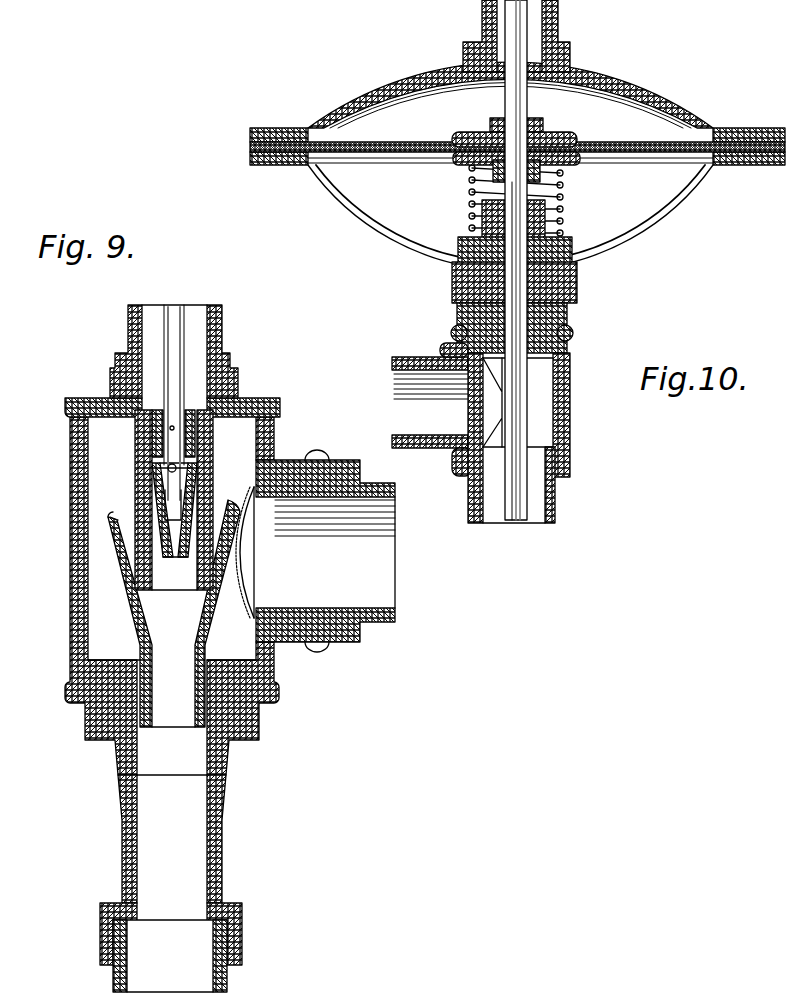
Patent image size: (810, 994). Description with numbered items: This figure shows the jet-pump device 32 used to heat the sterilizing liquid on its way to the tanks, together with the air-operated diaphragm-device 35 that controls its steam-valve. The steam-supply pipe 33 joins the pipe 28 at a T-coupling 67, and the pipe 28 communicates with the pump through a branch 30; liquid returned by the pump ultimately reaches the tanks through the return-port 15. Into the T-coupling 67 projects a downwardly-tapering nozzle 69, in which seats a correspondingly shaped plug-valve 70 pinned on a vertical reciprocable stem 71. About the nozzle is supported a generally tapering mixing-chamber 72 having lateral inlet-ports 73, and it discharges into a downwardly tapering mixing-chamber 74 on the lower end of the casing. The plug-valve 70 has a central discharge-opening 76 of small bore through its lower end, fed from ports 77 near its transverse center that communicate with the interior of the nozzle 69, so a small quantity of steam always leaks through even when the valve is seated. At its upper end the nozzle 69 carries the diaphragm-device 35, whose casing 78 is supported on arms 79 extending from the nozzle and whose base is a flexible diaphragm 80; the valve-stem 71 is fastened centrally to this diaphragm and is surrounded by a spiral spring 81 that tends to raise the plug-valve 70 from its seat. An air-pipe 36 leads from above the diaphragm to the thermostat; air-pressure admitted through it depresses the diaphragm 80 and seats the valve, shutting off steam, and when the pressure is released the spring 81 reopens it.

In FIG. 9, the return-port 15 is at (143, 840).
In FIG. 9, the pipe 28 is at (228, 977).
In FIG. 9, the branch 30 is at (384, 585).
In FIG. 9, the jet-pump device 32 is at (285, 360).
In FIG. 10, the steam-supply pipe 33 is at (412, 357).
In FIG. 10, the diaphragm-device 35 is at (604, 78).
In FIG. 10, the air-pipe 36 is at (495, 22).
In FIG. 9, the T-coupling 67 is at (72, 640).
In FIG. 9, the nozzle 69 is at (222, 338).
In FIG. 10, the nozzle 69 is at (556, 505).
In FIG. 9, the plug-valve 70 is at (195, 417).
In FIG. 9, the valve-stem 71 is at (175, 324).
In FIG. 10, the valve-stem 71 is at (568, 320).
In FIG. 9, the mixing-chamber 72 is at (130, 603).
In FIG. 9, the lateral inlet-ports 73 is at (230, 512).
In FIG. 9, the downwardly tapering mixing-chamber 74 is at (207, 727).
In FIG. 9, the central discharge-opening 76 is at (165, 520).
In FIG. 9, the ports 77 is at (168, 468).
In FIG. 10, the casing 78 is at (362, 106).
In FIG. 10, the arms 79 is at (742, 172).
In FIG. 10, the flexible diaphragm 80 is at (410, 160).
In FIG. 10, the spiral spring 81 is at (565, 188).